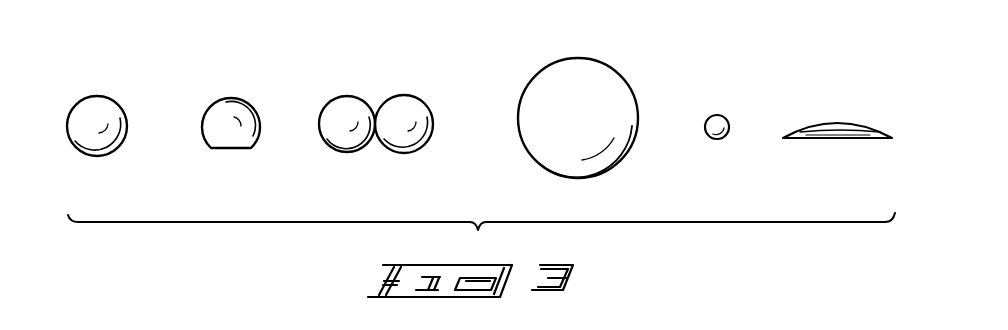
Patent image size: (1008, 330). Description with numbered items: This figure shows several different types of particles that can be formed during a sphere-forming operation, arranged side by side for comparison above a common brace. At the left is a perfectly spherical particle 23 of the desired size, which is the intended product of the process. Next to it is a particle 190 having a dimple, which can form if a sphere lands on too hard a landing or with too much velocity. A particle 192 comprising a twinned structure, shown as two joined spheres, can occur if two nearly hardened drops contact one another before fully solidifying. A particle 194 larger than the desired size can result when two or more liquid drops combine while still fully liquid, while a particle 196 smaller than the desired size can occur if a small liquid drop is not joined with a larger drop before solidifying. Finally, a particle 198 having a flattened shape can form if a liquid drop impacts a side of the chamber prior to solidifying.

The spherical particle 23 is at (98, 96).
The particle having a dimple 190 is at (235, 97).
The particle comprising a twinned structure 192 is at (348, 94).
The particle larger than the desired size 194 is at (583, 58).
The particle smaller than the desired size 196 is at (720, 115).
The particle having a flattened shape 198 is at (837, 116).